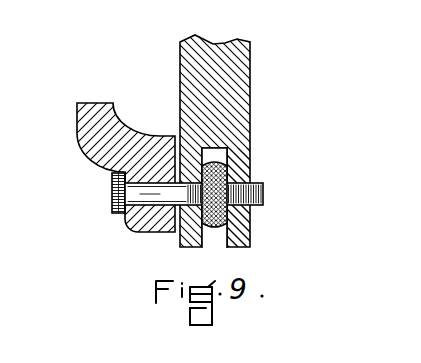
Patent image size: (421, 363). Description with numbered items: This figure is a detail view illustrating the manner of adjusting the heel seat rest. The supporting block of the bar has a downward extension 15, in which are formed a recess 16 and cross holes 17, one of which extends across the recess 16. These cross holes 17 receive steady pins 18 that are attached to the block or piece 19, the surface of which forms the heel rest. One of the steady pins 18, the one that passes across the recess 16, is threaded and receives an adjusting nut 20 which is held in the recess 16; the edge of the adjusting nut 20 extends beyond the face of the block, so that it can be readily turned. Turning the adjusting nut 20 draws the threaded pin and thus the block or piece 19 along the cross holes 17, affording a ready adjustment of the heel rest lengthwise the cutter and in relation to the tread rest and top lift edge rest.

The downward extension 15 is at (227, 98).
The recess 16 is at (213, 153).
The cross holes 17 is at (228, 180).
The steady pins 18 is at (263, 195).
The block or piece 19 is at (103, 157).
The adjusting nut 20 is at (237, 224).